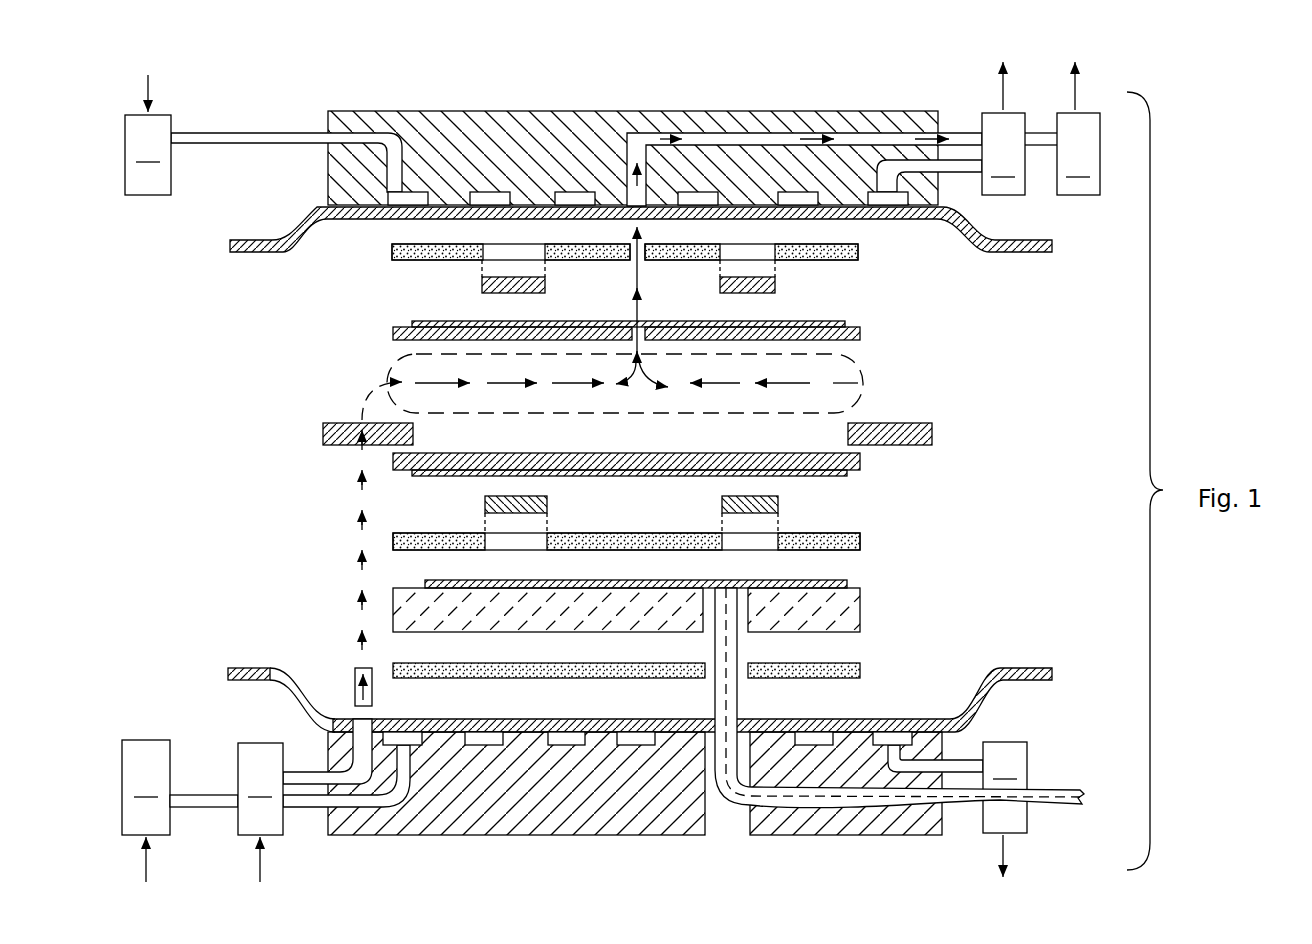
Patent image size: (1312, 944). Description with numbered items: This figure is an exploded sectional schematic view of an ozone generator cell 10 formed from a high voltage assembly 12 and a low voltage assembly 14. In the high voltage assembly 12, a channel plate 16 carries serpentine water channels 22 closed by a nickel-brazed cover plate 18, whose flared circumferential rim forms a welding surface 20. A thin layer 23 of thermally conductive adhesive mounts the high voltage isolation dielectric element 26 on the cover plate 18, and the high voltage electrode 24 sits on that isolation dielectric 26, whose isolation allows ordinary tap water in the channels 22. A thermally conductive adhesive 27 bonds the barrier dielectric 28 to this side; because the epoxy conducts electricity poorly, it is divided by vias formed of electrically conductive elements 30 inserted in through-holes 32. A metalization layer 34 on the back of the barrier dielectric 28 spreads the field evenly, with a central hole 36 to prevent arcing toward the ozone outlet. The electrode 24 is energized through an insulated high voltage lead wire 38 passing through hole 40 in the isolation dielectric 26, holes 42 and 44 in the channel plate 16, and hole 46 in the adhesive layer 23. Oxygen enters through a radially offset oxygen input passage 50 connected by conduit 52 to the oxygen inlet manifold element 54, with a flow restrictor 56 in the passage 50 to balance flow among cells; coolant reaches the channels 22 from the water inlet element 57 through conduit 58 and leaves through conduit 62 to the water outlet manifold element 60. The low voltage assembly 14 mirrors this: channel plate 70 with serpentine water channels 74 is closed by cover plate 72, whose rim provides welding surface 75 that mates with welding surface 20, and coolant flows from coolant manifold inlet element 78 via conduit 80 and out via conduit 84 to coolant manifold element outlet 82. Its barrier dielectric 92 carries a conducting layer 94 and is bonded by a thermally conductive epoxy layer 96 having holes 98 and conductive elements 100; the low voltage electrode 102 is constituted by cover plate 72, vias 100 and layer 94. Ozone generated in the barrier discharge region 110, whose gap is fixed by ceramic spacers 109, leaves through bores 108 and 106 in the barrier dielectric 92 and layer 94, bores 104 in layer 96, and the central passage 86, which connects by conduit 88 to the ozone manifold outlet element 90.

The ozone generator cell 10 is at (797, 53).
The high voltage assembly 12 is at (369, 867).
The low voltage assembly 14 is at (326, 69).
The channel plate 16 is at (505, 836).
The cover plate 18 is at (228, 674).
The welding surface 20 is at (247, 668).
The serpentine water channels 22 is at (484, 732).
The thermally conductive adhesive layer 23 is at (860, 668).
The high voltage electrode 24 is at (847, 583).
The high voltage isolation dielectric element 26 is at (862, 610).
The thermally conductive adhesive 27 is at (860, 542).
The barrier dielectric 28 is at (860, 462).
The electrically conductive elements 30 is at (547, 507).
The through-holes 32 is at (496, 548).
The metalization layer 34 is at (428, 476).
The hole 36 is at (648, 476).
The insulated high voltage lead wire 38 is at (738, 700).
The hole 40 is at (740, 632).
The hole 42 is at (713, 838).
The hole 44 is at (762, 835).
The hole 46 is at (715, 658).
The oxygen input passage 50 is at (353, 715).
The conduit 52 is at (308, 772).
The oxygen inlet manifold element 54 is at (260, 812).
The flow restrictor 56 is at (356, 688).
The gas source 57 is at (180, 811).
The conduit 58 is at (305, 808).
The water outlet manifold element 60 is at (1005, 809).
The conduit 62 is at (962, 760).
The channel plate 70 is at (448, 110).
The cover plate 72 is at (228, 246).
The serpentine water channels 74 is at (490, 192).
The welding surface 75 is at (252, 253).
The coolant manifold inlet element 78 is at (148, 135).
The conduit 80 is at (265, 132).
The coolant manifold element outlet 82 is at (1003, 128).
The conduit 84 is at (952, 174).
The ozone outlet passage 86 is at (626, 170).
The conduit 88 is at (963, 132).
The ozone manifold outlet element 90 is at (1078, 128).
The barrier dielectric 92 is at (860, 333).
The conducting layer 94 is at (845, 320).
The thermally conductive epoxy layer 96 is at (860, 252).
The holes 98 is at (493, 256).
The conductive elements 100 is at (482, 285).
The low voltage electrode 102 is at (378, 279).
The bores 104 is at (629, 260).
The bore 106 is at (633, 320).
The bore 108 is at (652, 362).
The ceramic spacers 109 is at (323, 434).
The barrier discharge region 110 is at (866, 368).